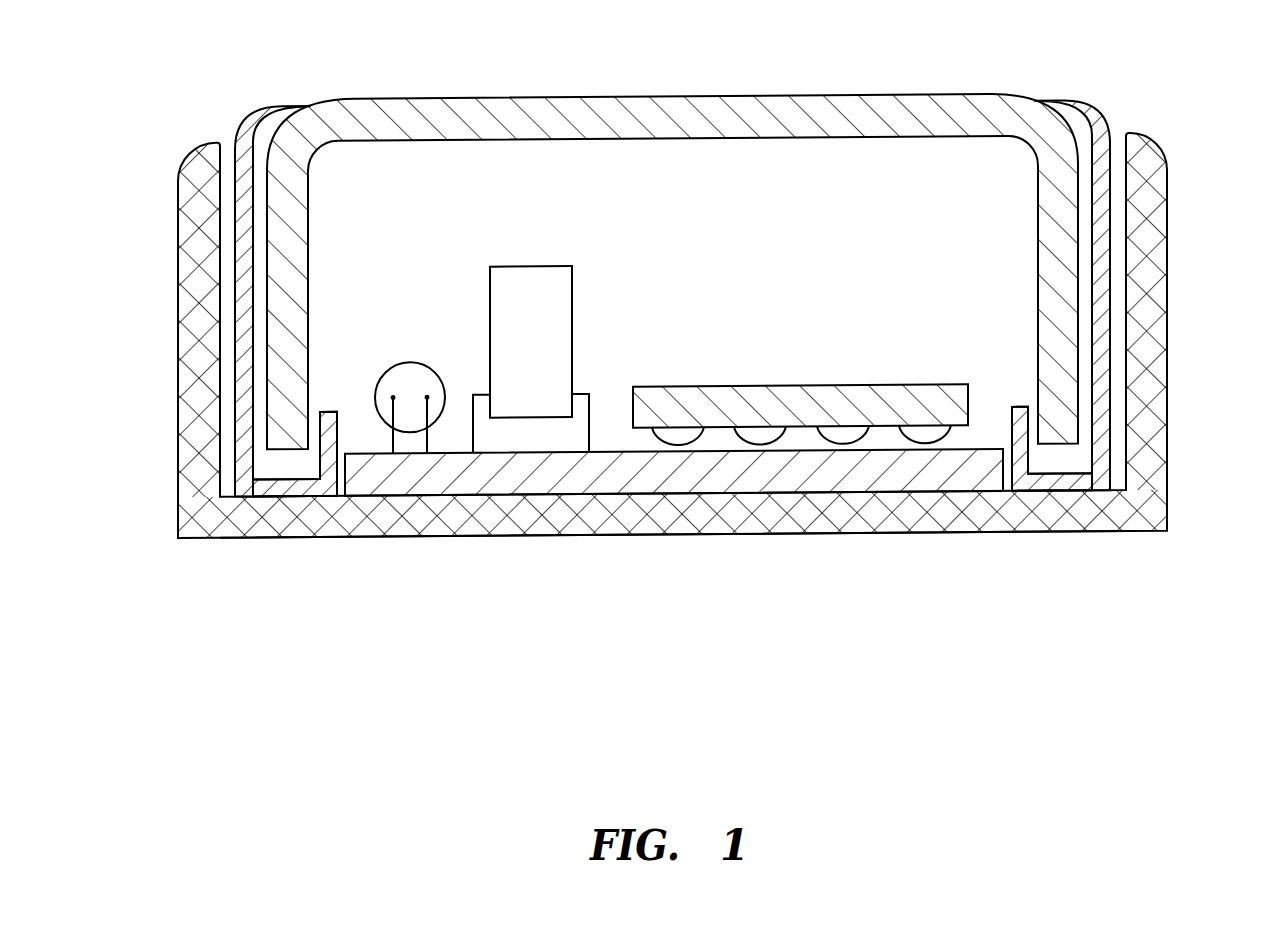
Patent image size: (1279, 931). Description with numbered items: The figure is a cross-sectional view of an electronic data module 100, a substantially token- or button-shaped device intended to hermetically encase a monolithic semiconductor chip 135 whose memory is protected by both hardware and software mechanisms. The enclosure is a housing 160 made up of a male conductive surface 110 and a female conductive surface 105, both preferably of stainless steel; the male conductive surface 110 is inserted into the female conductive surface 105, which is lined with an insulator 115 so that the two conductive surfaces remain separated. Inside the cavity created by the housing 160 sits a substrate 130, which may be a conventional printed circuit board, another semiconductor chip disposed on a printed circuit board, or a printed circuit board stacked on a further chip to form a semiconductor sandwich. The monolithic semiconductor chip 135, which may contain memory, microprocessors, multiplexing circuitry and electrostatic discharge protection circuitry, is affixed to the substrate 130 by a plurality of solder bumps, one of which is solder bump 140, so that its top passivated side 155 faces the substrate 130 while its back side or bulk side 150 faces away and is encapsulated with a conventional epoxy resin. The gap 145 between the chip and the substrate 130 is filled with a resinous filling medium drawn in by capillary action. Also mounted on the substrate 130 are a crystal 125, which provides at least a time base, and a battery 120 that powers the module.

The electronic data module 100 is at (725, 379).
The female conductive surface 105 is at (1168, 410).
The male conductive surface 110 is at (838, 97).
The insulator 115 is at (1083, 103).
The battery 120 is at (521, 266).
The crystal 125 is at (397, 363).
The substrate 130 is at (362, 453).
The monolithic semiconductor chip 135 is at (790, 397).
The solder bump 140 is at (650, 437).
The gap 145 is at (763, 535).
The back side or bulk side 150 is at (653, 385).
The top passivated side 155 is at (963, 433).
The housing 160 is at (797, 447).